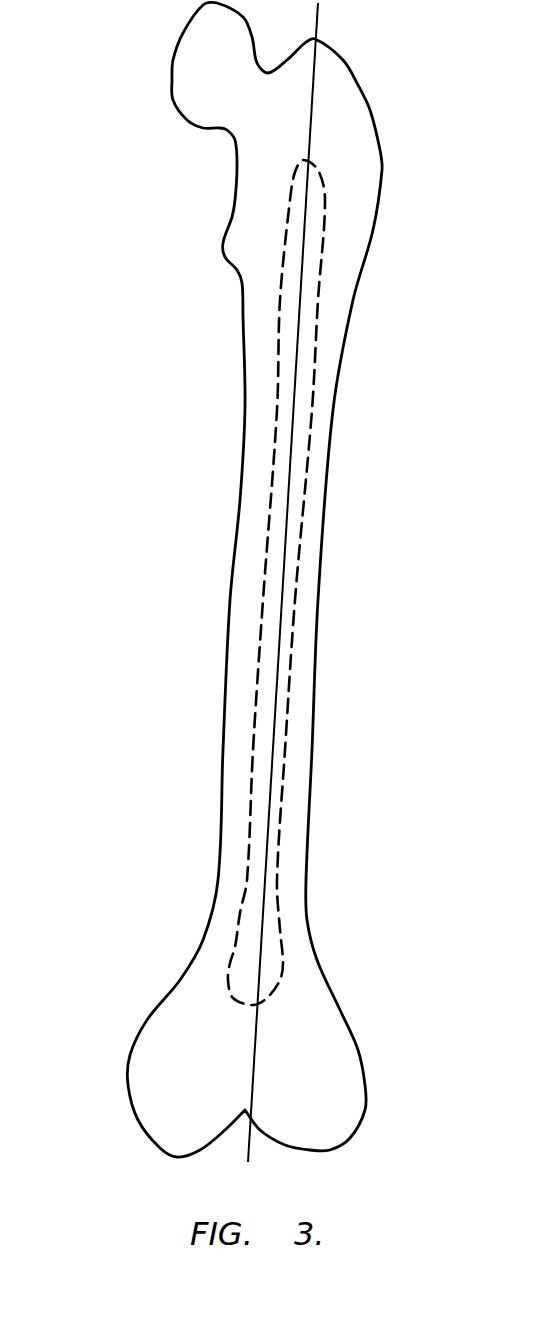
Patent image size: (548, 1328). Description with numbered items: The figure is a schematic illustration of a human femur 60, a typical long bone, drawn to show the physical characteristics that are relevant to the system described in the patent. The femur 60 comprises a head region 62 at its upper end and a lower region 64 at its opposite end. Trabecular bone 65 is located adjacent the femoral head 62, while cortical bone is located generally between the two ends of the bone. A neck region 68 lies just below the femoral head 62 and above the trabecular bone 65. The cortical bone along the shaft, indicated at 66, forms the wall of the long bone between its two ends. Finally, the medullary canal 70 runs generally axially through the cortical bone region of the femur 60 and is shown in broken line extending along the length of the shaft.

The femur 60 is at (323, 512).
The head region 62 is at (135, 28).
The lower region 64 is at (396, 1135).
The trabecular bone 65 is at (343, 97).
The medial cortex 66 is at (248, 522).
The neck region 68 is at (233, 122).
The medullary canal 70 is at (315, 340).